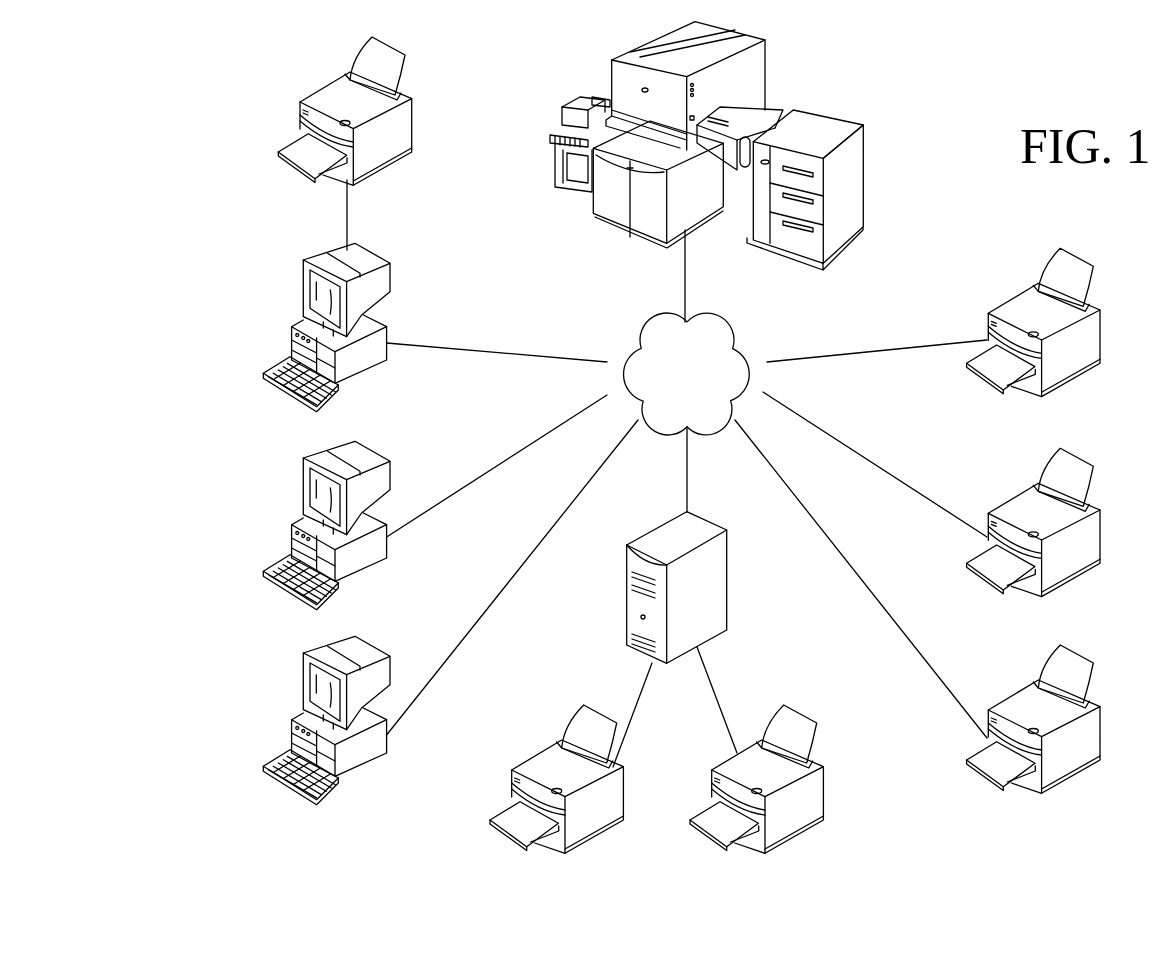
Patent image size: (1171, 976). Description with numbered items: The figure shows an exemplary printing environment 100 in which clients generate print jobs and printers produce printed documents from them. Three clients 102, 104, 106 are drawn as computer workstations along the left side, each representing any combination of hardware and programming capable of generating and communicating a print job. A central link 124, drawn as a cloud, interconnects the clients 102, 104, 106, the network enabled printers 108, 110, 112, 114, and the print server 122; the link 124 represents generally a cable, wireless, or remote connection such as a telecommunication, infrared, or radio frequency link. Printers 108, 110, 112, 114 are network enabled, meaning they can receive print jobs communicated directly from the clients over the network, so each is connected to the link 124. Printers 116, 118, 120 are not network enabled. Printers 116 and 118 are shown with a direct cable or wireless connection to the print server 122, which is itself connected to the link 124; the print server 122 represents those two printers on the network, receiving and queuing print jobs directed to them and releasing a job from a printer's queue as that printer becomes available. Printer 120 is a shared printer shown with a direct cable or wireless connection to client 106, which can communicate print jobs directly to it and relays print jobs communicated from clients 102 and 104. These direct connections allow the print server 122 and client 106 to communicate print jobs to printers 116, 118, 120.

The printing environment 100 is at (222, 197).
The client 102 is at (368, 658).
The client 104 is at (370, 459).
The client 106 is at (370, 262).
The printer 108 is at (618, 70).
The printer 110 is at (1093, 303).
The printer 112 is at (1093, 505).
The printer 114 is at (1093, 702).
The printer 116 is at (813, 767).
The printer 118 is at (530, 768).
The shared printer 120 is at (403, 96).
The print server 122 is at (717, 602).
The link 124 is at (723, 328).